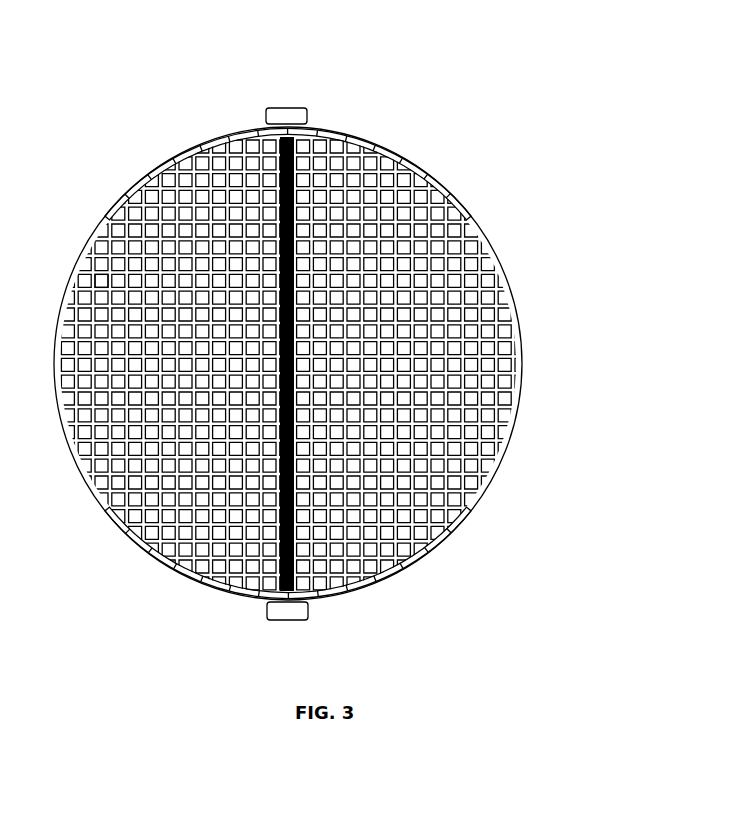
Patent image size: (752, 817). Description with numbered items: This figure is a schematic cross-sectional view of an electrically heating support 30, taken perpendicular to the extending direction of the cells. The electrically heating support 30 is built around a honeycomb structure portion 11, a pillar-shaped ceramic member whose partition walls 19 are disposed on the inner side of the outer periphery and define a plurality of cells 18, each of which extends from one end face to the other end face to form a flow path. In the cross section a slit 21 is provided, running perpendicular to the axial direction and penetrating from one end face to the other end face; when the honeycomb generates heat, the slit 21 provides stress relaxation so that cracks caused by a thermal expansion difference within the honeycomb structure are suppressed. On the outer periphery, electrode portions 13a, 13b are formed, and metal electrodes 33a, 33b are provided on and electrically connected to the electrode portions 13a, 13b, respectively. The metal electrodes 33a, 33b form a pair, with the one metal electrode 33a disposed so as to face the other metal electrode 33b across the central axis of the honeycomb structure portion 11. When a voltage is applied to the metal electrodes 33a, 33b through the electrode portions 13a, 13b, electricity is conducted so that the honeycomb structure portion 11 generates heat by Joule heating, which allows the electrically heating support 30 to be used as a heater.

The electrically heating support 30 is at (322, 327).
The honeycomb structure portion 11 is at (518, 321).
The electrode portion 13a is at (420, 165).
The electrode portion 13b is at (431, 556).
The cells 18 is at (82, 318).
The partition walls 19 is at (114, 287).
The slit 21 is at (278, 256).
The metal electrode 33a is at (266, 118).
The metal electrode 33b is at (267, 611).